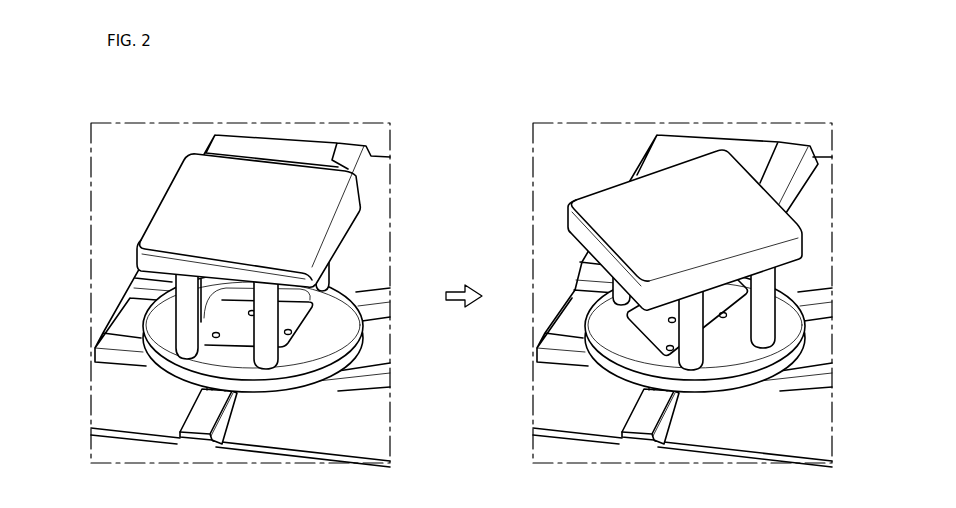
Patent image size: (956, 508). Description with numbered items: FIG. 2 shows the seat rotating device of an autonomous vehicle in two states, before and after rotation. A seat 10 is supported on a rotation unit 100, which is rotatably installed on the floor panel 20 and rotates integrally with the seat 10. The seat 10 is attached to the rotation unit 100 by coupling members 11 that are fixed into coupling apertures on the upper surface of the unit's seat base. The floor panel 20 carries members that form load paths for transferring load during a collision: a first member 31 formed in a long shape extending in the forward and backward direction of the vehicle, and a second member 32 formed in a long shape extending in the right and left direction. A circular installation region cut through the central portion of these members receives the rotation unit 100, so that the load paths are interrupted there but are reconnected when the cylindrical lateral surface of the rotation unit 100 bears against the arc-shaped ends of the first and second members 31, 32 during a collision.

The seat 10 is at (263, 181).
The coupling members 11 is at (183, 323).
The floor panel 20 is at (107, 376).
The first member 31 is at (190, 412).
The second member 32 is at (373, 374).
The rotation unit 100 is at (138, 321).